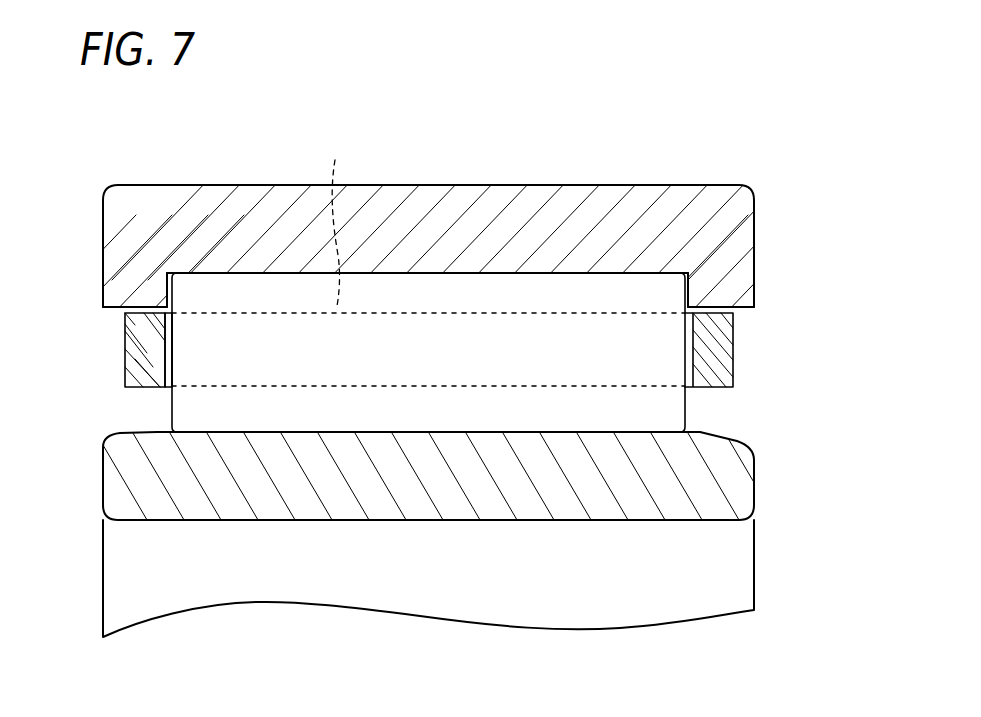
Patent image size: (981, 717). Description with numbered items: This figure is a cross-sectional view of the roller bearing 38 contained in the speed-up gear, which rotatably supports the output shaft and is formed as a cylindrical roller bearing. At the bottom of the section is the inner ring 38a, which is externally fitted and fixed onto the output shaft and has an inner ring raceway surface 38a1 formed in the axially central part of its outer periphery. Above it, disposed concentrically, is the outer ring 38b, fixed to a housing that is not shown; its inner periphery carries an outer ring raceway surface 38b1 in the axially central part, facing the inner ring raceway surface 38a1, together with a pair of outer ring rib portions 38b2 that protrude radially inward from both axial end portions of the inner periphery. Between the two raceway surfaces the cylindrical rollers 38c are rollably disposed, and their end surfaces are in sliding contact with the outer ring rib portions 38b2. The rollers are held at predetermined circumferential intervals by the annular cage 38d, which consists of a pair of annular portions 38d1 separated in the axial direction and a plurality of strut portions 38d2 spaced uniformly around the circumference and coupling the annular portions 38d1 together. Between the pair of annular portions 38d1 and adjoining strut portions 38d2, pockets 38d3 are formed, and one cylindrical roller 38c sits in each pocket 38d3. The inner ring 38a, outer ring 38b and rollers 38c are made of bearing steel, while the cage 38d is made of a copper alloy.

The roller bearing 38 is at (429, 391).
The inner ring 38a is at (503, 521).
The inner ring raceway surface 38a1 is at (302, 432).
The outer ring 38b is at (400, 185).
The outer ring raceway surface 38b1 is at (457, 275).
The outer ring rib portions 38b2 is at (110, 307).
The cylindrical rollers 38c is at (686, 410).
The annular cage 38d is at (429, 268).
The annular portions 38d1 is at (128, 338).
The strut portions 38d2 is at (334, 213).
The pockets 38d3 is at (163, 390).